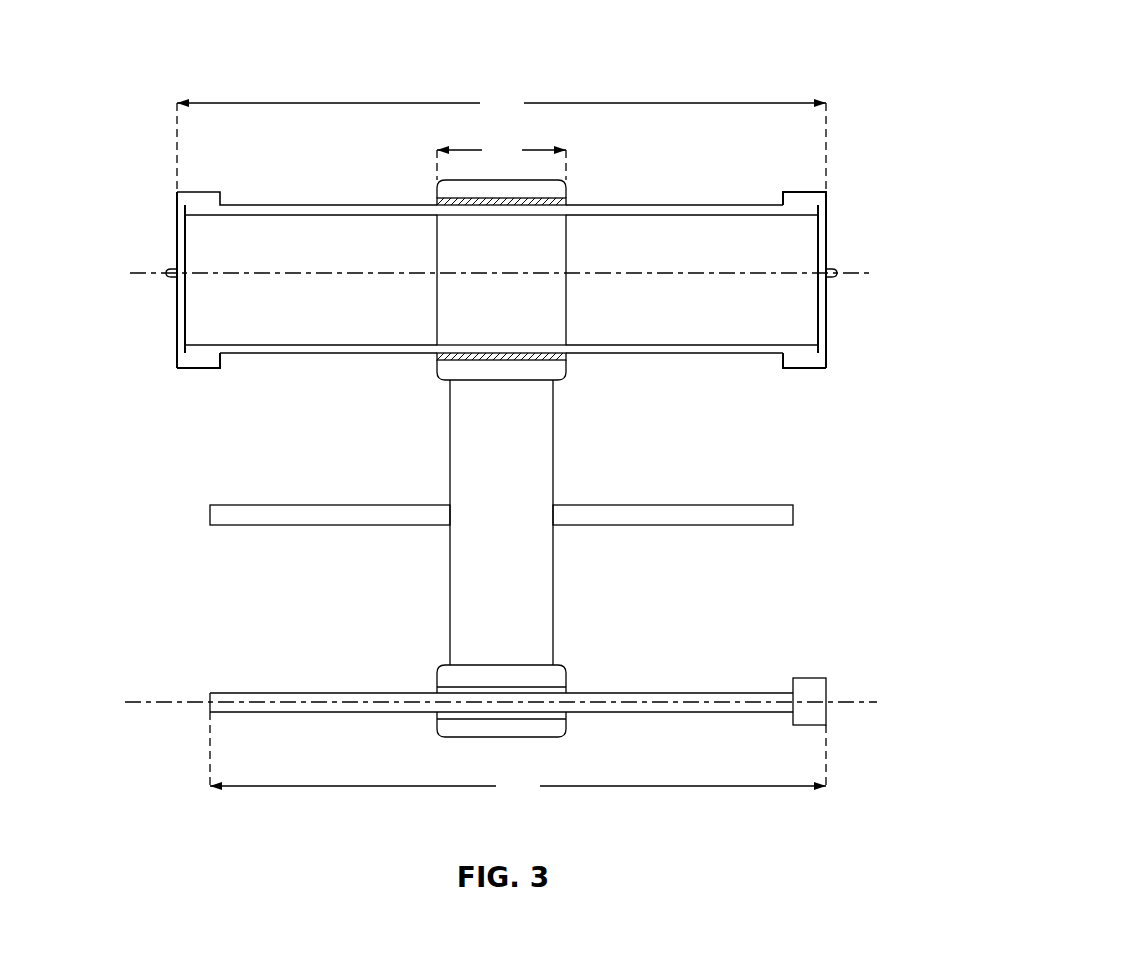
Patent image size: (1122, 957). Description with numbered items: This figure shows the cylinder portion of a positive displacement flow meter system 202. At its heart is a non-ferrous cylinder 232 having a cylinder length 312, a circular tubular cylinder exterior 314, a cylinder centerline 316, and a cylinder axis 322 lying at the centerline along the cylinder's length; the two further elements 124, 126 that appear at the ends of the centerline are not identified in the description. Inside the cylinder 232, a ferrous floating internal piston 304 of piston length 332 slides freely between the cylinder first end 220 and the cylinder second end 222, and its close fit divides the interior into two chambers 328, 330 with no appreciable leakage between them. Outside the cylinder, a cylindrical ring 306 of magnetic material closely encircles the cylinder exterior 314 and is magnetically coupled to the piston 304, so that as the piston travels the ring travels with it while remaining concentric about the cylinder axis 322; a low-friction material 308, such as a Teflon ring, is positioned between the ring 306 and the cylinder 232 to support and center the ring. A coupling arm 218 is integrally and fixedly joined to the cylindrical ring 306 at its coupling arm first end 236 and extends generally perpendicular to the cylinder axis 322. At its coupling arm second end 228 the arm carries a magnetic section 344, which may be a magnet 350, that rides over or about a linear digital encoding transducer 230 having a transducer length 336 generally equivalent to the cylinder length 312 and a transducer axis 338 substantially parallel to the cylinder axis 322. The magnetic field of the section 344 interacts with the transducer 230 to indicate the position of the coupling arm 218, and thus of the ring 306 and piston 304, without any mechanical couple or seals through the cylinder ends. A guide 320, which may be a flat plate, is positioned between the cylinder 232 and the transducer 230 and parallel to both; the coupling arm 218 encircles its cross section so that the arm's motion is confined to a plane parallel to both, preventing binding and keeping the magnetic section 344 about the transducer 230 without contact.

The positive displacement flow meter system 202 is at (736, 40).
The cylinder length 312 is at (501, 141).
The piston length 332 is at (501, 159).
The transducer length 336 is at (518, 755).
The cylinder centerline 316 is at (168, 273).
The first chamber 328 is at (292, 228).
The second chamber 330 is at (672, 222).
The cylinder 232 is at (720, 205).
The cylinder exterior 314 is at (702, 355).
The cylinder first end 220 is at (200, 360).
The cylinder second end 222 is at (808, 366).
The cylinder axis 322 is at (692, 273).
The left pivot pin 124 is at (170, 279).
The right pivot pin 126 is at (838, 275).
The ferrous floating internal piston 304 is at (445, 318).
The low-friction material 308 is at (437, 201).
The cylindrical ring 306 is at (555, 190).
The coupling arm first end 236 is at (560, 380).
The coupling arm 218 is at (553, 458).
The coupling arm second end 228 is at (553, 665).
The guide 320 is at (225, 505).
The magnetic section 344 is at (440, 675).
The transducer axis 338 is at (182, 702).
The linear digital encoding transducer 230 is at (812, 678).
The magnet 350 is at (440, 733).